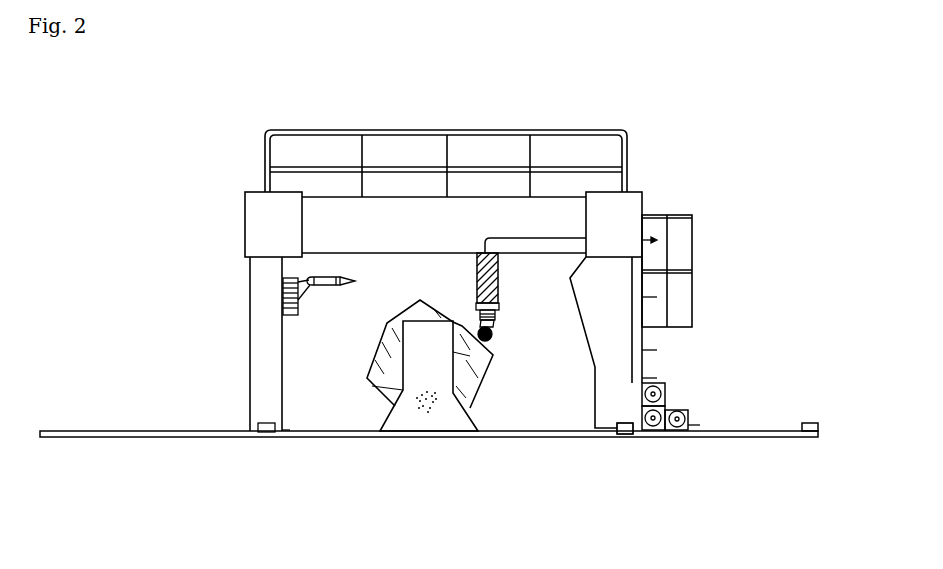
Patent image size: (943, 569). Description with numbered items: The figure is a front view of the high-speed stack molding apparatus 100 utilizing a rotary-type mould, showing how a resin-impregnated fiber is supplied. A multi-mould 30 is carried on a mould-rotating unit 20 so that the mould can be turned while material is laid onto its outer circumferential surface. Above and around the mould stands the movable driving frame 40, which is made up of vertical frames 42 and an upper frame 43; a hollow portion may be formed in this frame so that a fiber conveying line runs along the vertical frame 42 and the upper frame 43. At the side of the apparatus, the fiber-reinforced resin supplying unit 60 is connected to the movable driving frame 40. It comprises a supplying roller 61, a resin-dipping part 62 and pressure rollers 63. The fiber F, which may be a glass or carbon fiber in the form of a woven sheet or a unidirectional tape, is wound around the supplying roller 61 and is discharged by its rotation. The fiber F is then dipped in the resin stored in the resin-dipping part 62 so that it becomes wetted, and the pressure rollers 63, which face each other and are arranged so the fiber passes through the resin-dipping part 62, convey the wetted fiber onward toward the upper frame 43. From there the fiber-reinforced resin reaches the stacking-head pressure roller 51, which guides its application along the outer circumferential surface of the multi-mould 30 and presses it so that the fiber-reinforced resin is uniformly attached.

The high-speed stack molding apparatus 100 is at (194, 121).
The mould-rotating unit 20 is at (452, 424).
The multi-mould 30 is at (486, 399).
The movable driving frame 40 is at (246, 175).
The vertical frame 42 is at (265, 348).
The upper frame 43 is at (553, 212).
The stacking-head pressure roller 51 is at (487, 340).
The fiber-reinforced resin supplying unit 60 is at (694, 407).
The supplying roller 61 is at (680, 440).
The resin-dipping part 62 is at (642, 440).
The pressure rollers 63 is at (666, 405).
The fiber F is at (596, 242).